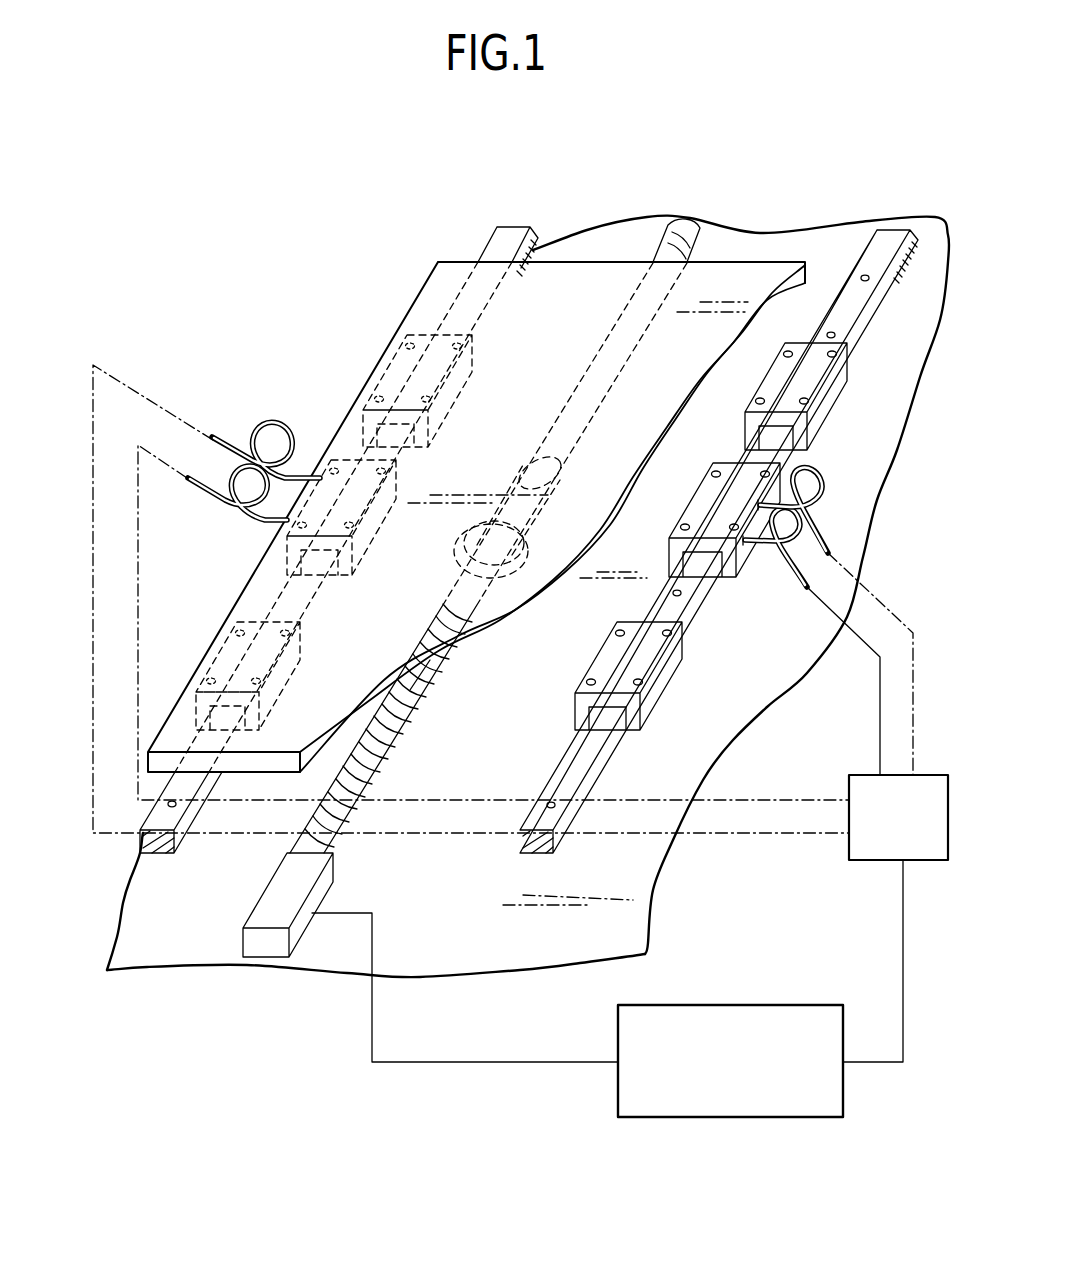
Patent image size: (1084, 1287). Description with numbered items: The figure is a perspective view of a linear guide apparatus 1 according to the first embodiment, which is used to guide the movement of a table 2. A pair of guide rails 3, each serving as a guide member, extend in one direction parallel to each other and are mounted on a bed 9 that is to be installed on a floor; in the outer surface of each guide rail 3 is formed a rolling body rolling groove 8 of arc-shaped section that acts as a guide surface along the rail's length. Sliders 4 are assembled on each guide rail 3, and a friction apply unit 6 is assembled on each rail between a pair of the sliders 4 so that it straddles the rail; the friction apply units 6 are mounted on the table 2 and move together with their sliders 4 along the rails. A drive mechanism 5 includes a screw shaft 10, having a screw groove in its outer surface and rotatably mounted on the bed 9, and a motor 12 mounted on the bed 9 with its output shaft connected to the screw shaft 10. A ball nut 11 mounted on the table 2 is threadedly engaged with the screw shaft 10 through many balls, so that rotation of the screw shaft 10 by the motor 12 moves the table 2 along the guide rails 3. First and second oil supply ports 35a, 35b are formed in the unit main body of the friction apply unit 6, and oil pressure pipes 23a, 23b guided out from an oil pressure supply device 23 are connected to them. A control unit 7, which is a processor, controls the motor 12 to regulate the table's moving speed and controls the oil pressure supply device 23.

The linear guide apparatus 1 is at (802, 333).
The table 2 is at (458, 252).
The guide rail 3 is at (514, 218).
The slider 4 is at (370, 368).
The drive mechanism 5 is at (405, 758).
The friction apply unit 6 is at (336, 452).
The control unit 7 is at (736, 1005).
The rolling body rolling groove 8 is at (530, 245).
The bed 9 is at (748, 245).
The screw shaft 10 is at (420, 725).
The ball nut 11 is at (510, 605).
The motor 12 is at (325, 890).
The oil pressure supply device 23 is at (872, 862).
The oil pressure pipe 23a is at (200, 488).
The oil pressure pipe 23b is at (220, 438).
The first oil supply port 35a is at (738, 548).
The second oil supply port 35b is at (790, 485).